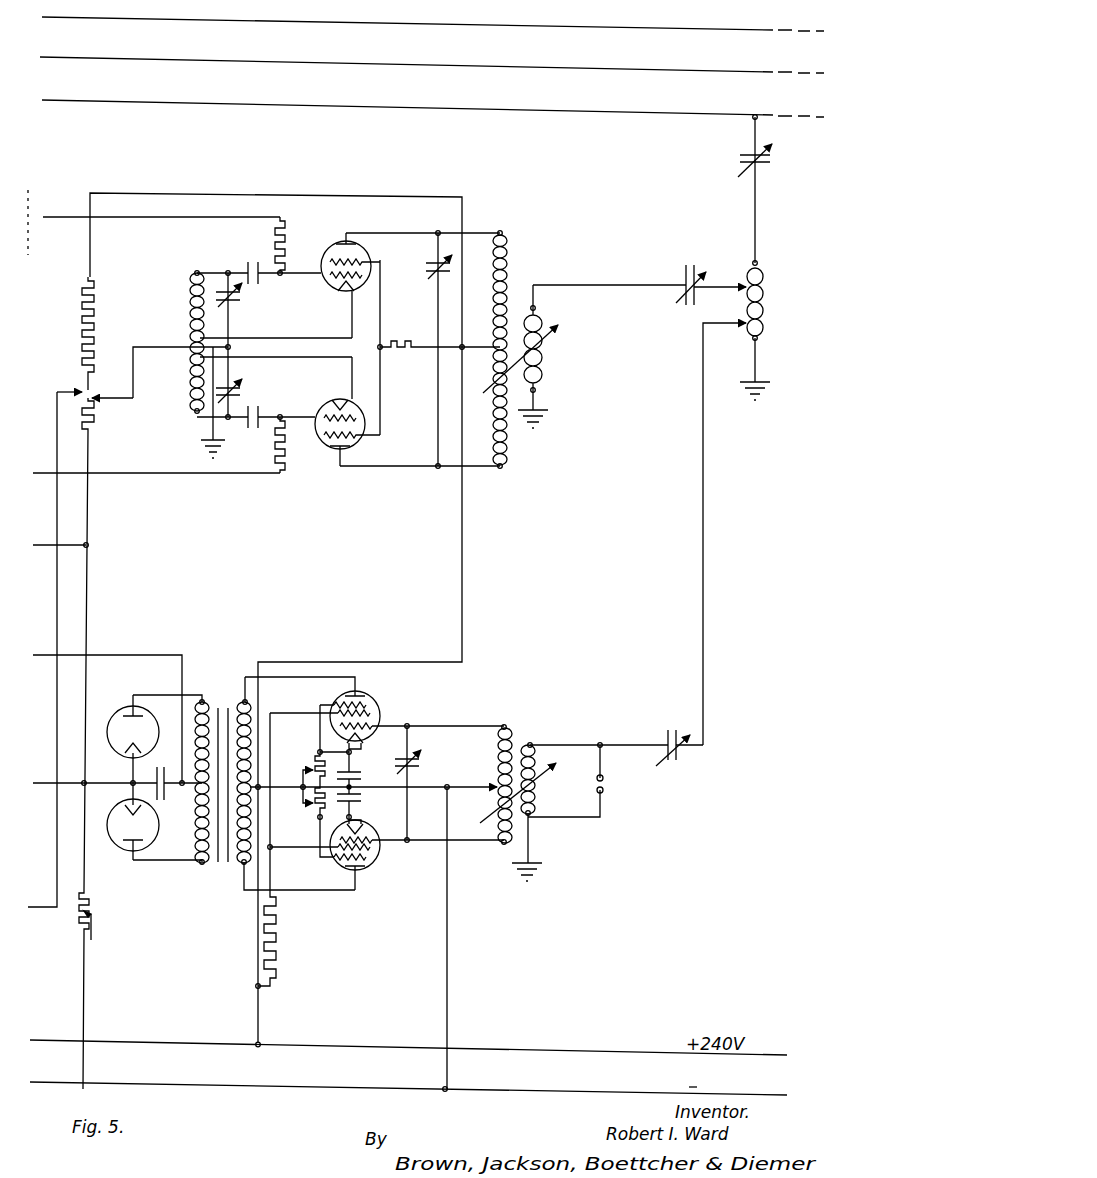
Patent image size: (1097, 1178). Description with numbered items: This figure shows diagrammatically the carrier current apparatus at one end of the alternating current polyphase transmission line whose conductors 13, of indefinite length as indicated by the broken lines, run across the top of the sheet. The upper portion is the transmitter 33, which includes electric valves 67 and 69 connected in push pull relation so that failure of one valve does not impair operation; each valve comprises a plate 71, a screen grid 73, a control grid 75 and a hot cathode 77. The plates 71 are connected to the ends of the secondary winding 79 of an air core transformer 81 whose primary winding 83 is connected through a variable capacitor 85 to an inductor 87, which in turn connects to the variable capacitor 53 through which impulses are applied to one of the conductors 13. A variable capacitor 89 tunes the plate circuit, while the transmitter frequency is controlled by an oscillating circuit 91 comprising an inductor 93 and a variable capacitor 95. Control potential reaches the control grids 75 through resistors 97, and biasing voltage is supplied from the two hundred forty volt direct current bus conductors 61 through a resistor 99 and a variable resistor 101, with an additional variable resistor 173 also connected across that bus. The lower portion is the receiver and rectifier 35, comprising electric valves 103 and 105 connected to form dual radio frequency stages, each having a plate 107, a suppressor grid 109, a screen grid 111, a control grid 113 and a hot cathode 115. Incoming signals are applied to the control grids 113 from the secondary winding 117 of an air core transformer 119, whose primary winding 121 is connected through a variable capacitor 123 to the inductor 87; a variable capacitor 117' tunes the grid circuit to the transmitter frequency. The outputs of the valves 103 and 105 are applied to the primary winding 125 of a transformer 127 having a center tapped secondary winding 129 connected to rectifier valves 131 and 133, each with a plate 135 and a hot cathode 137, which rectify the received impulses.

The conductors 13 is at (125, 18).
The transmitter 33 is at (512, 203).
The receiver and rectifier 35 is at (371, 646).
The variable capacitor 53 is at (738, 155).
The conductors 61 is at (61, 1036).
The electric valve 67 is at (318, 249).
The electric valve 69 is at (322, 455).
The plate 71 is at (355, 246).
The screen grid 73 is at (330, 260).
The control grid 75 is at (328, 279).
The hot cathode 77 is at (332, 292).
The secondary winding 79 is at (510, 270).
The air core transformer 81 is at (520, 441).
The primary winding 83 is at (542, 357).
The variable capacitor 85 is at (691, 264).
The inductor 87 is at (763, 298).
The variable capacitor 89 is at (424, 270).
The oscillating circuit 91 is at (176, 289).
The inductor 93 is at (190, 320).
The variable capacitor 95 is at (241, 300).
The resistor 97 is at (275, 241).
The resistor 99 is at (95, 313).
The variable resistor 101 is at (94, 424).
The electric valve 103 is at (390, 712).
The electric valve 105 is at (372, 877).
The plate 107 is at (362, 694).
The suppressor grid 109 is at (366, 703).
The screen grid 111 is at (383, 713).
The control grid 113 is at (368, 729).
The hot cathode 115 is at (361, 741).
The secondary winding 117 is at (472, 774).
The variable capacitor 117' is at (433, 762).
The air core transformer 119 is at (524, 733).
The primary winding 121 is at (536, 803).
The variable capacitor 123 is at (672, 766).
The primary winding 125 is at (242, 701).
The transformer 127 is at (215, 879).
The center tapped secondary winding 129 is at (196, 820).
The rectifier valve 131 is at (105, 712).
The rectifier valve 133 is at (117, 858).
The plate 135 is at (141, 715).
The hot cathode 137 is at (124, 749).
The variable resistor 173 is at (77, 922).